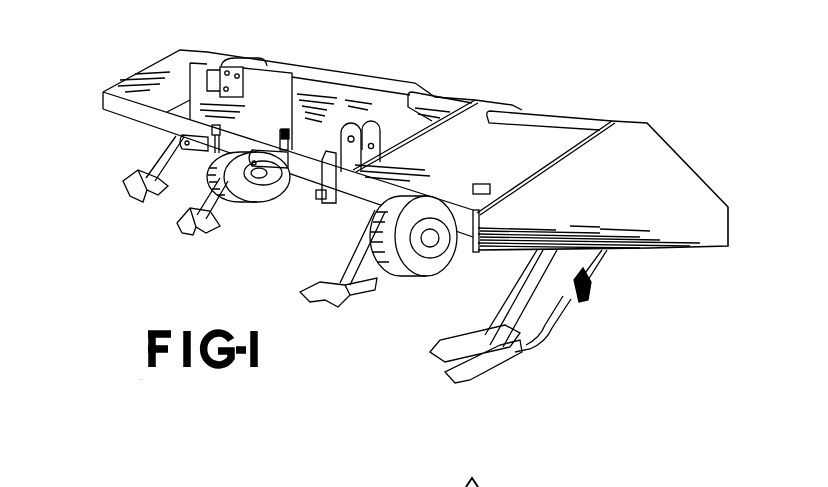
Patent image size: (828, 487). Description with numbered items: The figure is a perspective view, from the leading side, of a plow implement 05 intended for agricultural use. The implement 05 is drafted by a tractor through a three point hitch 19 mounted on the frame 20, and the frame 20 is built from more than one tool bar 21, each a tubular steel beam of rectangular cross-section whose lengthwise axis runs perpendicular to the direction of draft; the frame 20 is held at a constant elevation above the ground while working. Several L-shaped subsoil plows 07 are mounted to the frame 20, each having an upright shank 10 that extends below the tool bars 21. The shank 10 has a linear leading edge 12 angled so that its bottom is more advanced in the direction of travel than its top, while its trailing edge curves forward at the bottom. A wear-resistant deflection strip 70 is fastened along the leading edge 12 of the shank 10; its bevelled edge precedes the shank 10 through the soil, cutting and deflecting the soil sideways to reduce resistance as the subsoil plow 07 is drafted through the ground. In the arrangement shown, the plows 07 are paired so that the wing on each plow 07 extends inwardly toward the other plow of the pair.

The plow implement 05 is at (145, 277).
The subsoil plow 07 is at (562, 346).
The shank 10 is at (587, 272).
The leading edge 12 is at (352, 247).
The three point hitch 19 is at (243, 47).
The frame 20 is at (304, 198).
The tool bar 21 is at (123, 106).
The deflection strip 70 is at (530, 292).